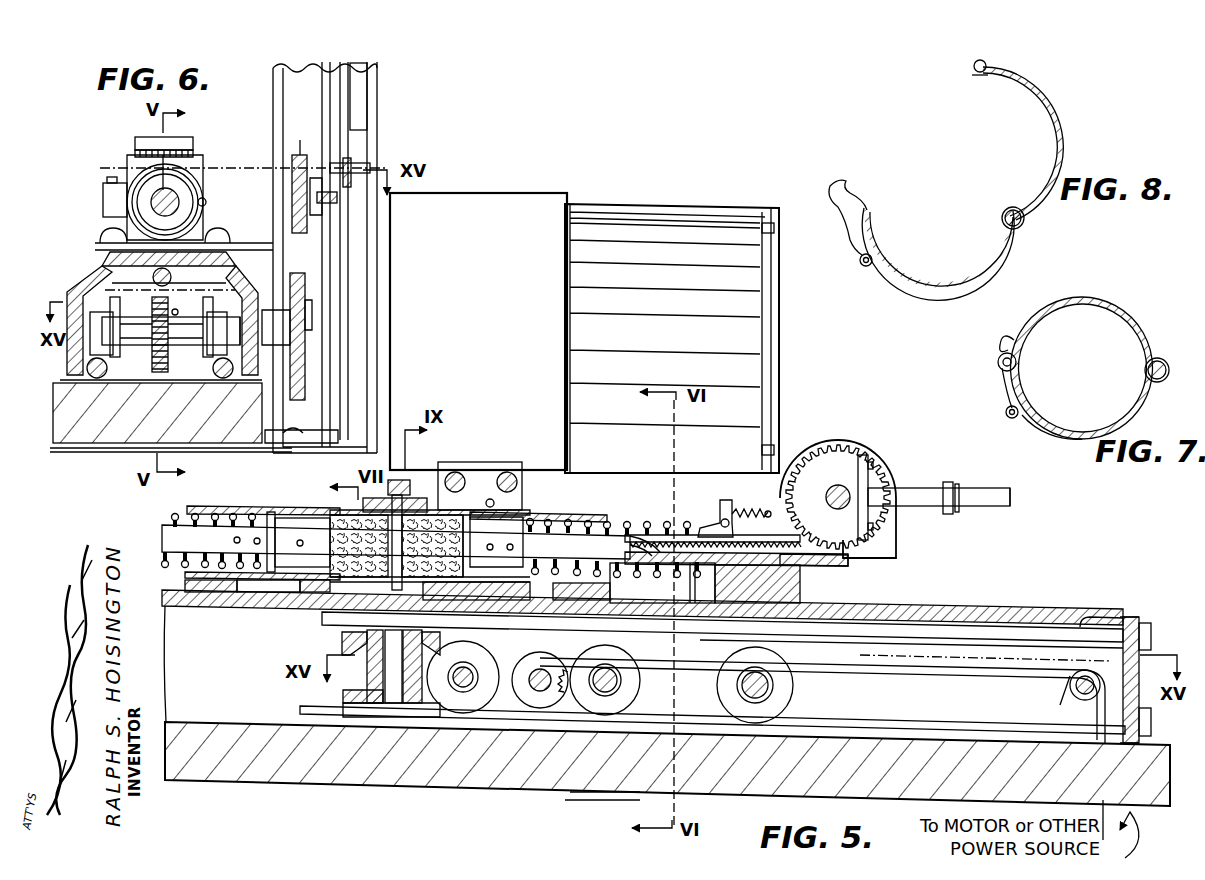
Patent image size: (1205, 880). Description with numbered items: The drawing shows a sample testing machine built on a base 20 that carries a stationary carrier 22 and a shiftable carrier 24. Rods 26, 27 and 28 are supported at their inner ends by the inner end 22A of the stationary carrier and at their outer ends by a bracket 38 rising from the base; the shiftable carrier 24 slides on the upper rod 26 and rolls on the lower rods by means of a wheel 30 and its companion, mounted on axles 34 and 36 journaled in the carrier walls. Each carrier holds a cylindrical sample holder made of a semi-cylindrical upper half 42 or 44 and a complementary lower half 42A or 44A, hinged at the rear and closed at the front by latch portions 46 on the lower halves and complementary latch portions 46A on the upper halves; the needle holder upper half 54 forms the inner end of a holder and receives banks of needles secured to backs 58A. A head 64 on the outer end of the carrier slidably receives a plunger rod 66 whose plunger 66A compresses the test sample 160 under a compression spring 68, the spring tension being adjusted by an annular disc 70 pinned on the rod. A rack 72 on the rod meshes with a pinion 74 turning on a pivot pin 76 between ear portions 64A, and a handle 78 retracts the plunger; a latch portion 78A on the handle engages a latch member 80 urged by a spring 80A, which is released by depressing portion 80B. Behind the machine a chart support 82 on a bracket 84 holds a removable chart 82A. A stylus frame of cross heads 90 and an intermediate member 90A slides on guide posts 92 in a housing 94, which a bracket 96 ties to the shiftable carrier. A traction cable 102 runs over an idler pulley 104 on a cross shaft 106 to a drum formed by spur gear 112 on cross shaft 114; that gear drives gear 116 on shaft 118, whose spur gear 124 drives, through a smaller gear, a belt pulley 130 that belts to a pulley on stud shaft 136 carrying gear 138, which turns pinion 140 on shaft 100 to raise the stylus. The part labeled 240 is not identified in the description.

In FIG. 6, the base 20 is at (108, 403).
In FIG. 5, the base 20 is at (667, 764).
In FIG. 5, the stationary carrier 22 is at (203, 613).
In FIG. 5, the inner end of stationary carrier 22A is at (370, 675).
In FIG. 6, the shiftable carrier 24 is at (103, 270).
In FIG. 5, the shiftable carrier 24 is at (520, 622).
In FIG. 6, the upper rod 26 is at (170, 277).
In FIG. 5, the upper rod 26 is at (323, 620).
In FIG. 6, the rod 27 is at (117, 373).
In FIG. 6, the rod 28 is at (212, 374).
In FIG. 5, the rod 28 is at (850, 723).
In FIG. 5, the wheel 30 is at (465, 704).
In FIG. 5, the axle 34 is at (455, 704).
In FIG. 5, the axle 36 is at (743, 688).
In FIG. 5, the bracket 38 is at (1132, 706).
In FIG. 8, the upper half of holder 42 is at (903, 125).
In FIG. 7, the upper half of holder 42 is at (1173, 278).
In FIG. 5, the upper half of holder 42 is at (237, 505).
In FIG. 8, the lower half of holder 42A is at (920, 286).
In FIG. 7, the lower half of holder 42A is at (1070, 440).
In FIG. 6, the upper half of holder 44 is at (140, 176).
In FIG. 5, the upper half of holder 44 is at (580, 517).
In FIG. 6, the lower half of holder 44A is at (127, 240).
In FIG. 8, the lower half of holder 44A is at (1023, 227).
In FIG. 7, the lower half of holder 44A is at (1193, 345).
In FIG. 6, the latch portion 46 is at (127, 197).
In FIG. 8, the latch portion 46 is at (825, 193).
In FIG. 7, the latch portion 46 is at (1008, 343).
In FIG. 8, the complementary latch portion 46A is at (977, 65).
In FIG. 7, the complementary latch portion 46A is at (998, 367).
In FIG. 6, the needle holder upper half 54 is at (133, 163).
In FIG. 6, the back 58A is at (147, 140).
In FIG. 5, the head 64 is at (770, 598).
In FIG. 5, the ear portion 64A is at (880, 468).
In FIG. 6, the plunger rod 66 is at (157, 227).
In FIG. 5, the plunger rod 66 is at (177, 542).
In FIG. 5, the plunger 66A is at (303, 512).
In FIG. 6, the compression spring 68 is at (173, 187).
In FIG. 5, the compression spring 68 is at (177, 517).
In FIG. 5, the annular disc 70 is at (273, 563).
In FIG. 6, the rack 72 is at (166, 150).
In FIG. 5, the rack 72 is at (823, 563).
In FIG. 5, the pinion 74 is at (838, 458).
In FIG. 5, the pivot pin 76 is at (837, 488).
In FIG. 5, the handle 78 is at (972, 507).
In FIG. 5, the latch portion 78A is at (940, 484).
In FIG. 5, the latch member 80 is at (715, 507).
In FIG. 5, the spring 80A is at (787, 480).
In FIG. 5, the latch release portion 80B is at (690, 515).
In FIG. 6, the chart support 82 is at (362, 110).
In FIG. 5, the chart support 82 is at (780, 311).
In FIG. 6, the chart 82A is at (350, 97).
In FIG. 5, the chart 82A is at (740, 343).
In FIG. 6, the bracket 84 is at (147, 447).
In FIG. 5, the bracket 84 is at (692, 480).
In FIG. 6, the cross head 90 is at (337, 203).
In FIG. 6, the intermediate member 90A is at (297, 118).
In FIG. 6, the guide post 92 is at (332, 77).
In FIG. 6, the housing 94 is at (350, 153).
In FIG. 5, the housing 94 is at (503, 210).
In FIG. 6, the bracket 96 is at (263, 140).
In FIG. 5, the bracket 96 is at (512, 498).
In FIG. 6, the shaft 100 is at (257, 172).
In FIG. 5, the shaft 100 is at (490, 500).
In FIG. 5, the traction cable 102 is at (670, 663).
In FIG. 5, the idler pulley 104 is at (1080, 700).
In FIG. 5, the cross shaft 106 is at (1077, 685).
In FIG. 5, the spur gear 112 is at (622, 672).
In FIG. 5, the cross shaft 114 is at (617, 683).
In FIG. 6, the gear 116 is at (155, 310).
In FIG. 5, the gear 116 is at (537, 695).
In FIG. 6, the shaft 118 is at (137, 330).
In FIG. 5, the shaft 118 is at (552, 680).
In FIG. 6, the spur gear 124 is at (303, 303).
In FIG. 6, the belt pulley 130 is at (307, 367).
In FIG. 6, the stud shaft 136 is at (317, 212).
In FIG. 6, the gear 138 is at (303, 230).
In FIG. 6, the pinion 140 is at (297, 179).
In FIG. 5, the test sample 160 is at (425, 539).
In FIG. 6, the support 240 is at (287, 408).